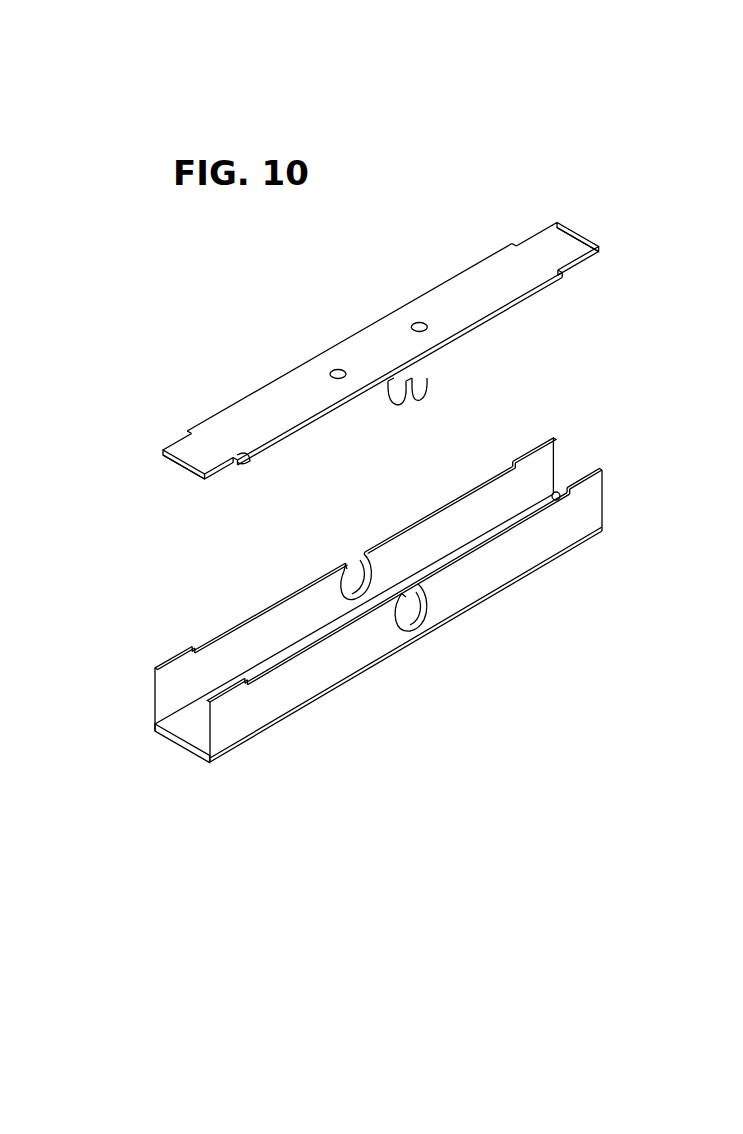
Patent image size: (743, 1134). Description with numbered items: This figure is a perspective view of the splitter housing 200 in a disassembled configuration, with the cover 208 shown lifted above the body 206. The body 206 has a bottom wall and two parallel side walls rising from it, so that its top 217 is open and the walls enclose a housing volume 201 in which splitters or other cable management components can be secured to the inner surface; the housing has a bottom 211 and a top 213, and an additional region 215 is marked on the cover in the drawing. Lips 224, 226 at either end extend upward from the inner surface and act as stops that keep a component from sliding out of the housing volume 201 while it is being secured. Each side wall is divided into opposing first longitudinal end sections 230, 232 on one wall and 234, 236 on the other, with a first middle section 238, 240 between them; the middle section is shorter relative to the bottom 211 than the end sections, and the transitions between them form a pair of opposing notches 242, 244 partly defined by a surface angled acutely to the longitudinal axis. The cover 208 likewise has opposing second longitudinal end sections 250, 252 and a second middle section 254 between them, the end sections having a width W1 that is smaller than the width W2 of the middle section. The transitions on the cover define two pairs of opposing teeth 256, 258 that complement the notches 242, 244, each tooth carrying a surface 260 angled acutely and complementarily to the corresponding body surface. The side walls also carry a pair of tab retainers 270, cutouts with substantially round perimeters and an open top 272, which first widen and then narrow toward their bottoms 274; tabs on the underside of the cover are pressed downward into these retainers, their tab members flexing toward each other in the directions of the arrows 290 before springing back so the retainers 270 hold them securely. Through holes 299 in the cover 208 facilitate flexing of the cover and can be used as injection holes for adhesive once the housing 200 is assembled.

The splitter housing 200 is at (630, 175).
The housing volume 201 is at (190, 712).
The body 206 is at (517, 567).
The cover 208 is at (304, 380).
The bottom 211 is at (197, 475).
The top 213 is at (593, 241).
The top surface of plate 215 is at (481, 282).
The open top of the body 217 is at (493, 513).
The lip 224 is at (190, 745).
The lip 226 is at (558, 492).
The first longitudinal end section 230 is at (218, 692).
The first longitudinal end section 232 is at (600, 475).
The first longitudinal end section 234 is at (177, 658).
The first longitudinal end section 236 is at (543, 442).
The first middle section 238 is at (342, 630).
The first middle section 240 is at (418, 518).
The notch 242 is at (568, 500).
The notch 244 is at (512, 463).
The second longitudinal end section 250 is at (177, 453).
The second longitudinal end section 252 is at (575, 228).
The second middle section 254 is at (370, 347).
The tooth 256 is at (568, 275).
The tooth 258 is at (520, 237).
The angled surface 260 is at (190, 432).
The tab retainer 270 is at (367, 560).
The open top 272 is at (357, 568).
The bottom of tab retainer 274 is at (357, 597).
The arrows 290 is at (430, 377).
The through holes 299 is at (418, 321).
The width w1 W1 is at (215, 464).
The width w2 W2 is at (496, 311).